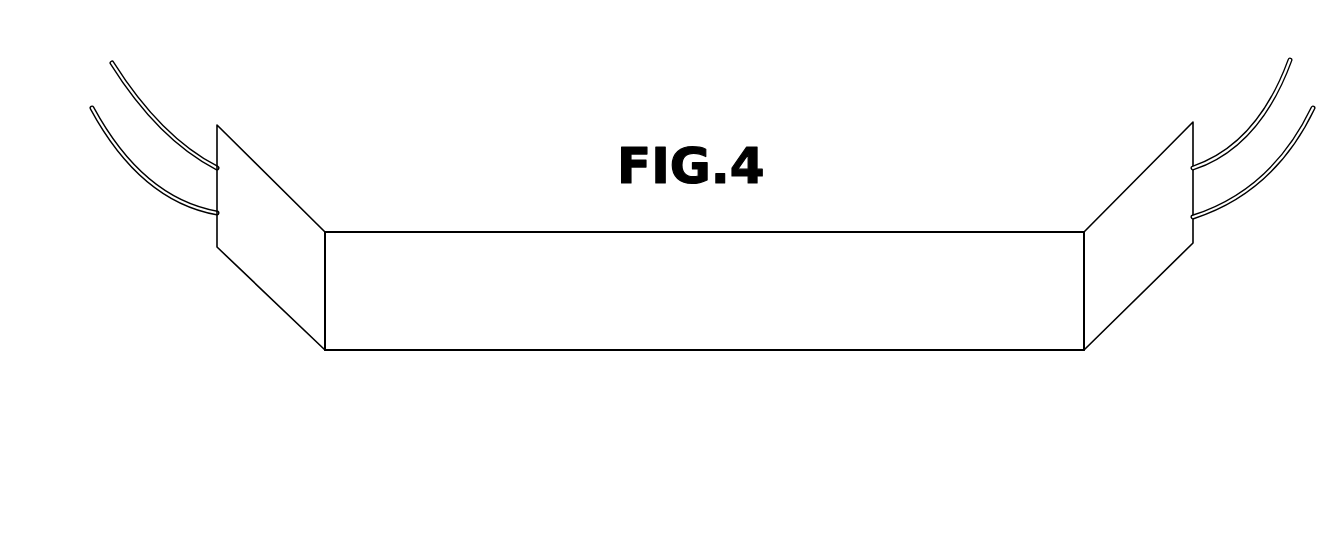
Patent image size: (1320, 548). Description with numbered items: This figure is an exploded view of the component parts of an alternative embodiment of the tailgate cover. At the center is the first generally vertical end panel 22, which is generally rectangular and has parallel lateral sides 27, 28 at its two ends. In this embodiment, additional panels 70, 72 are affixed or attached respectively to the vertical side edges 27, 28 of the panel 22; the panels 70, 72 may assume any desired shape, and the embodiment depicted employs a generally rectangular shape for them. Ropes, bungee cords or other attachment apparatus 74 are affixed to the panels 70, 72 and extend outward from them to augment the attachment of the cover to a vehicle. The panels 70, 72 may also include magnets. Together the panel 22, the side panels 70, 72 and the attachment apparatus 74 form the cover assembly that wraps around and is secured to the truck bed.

The first generally vertical end panel 22 is at (570, 322).
The lateral side 27 is at (325, 294).
The lateral side 28 is at (1085, 287).
The panel 70 is at (1143, 278).
The panel 72 is at (277, 289).
The attachment apparatus 74 is at (1247, 132).